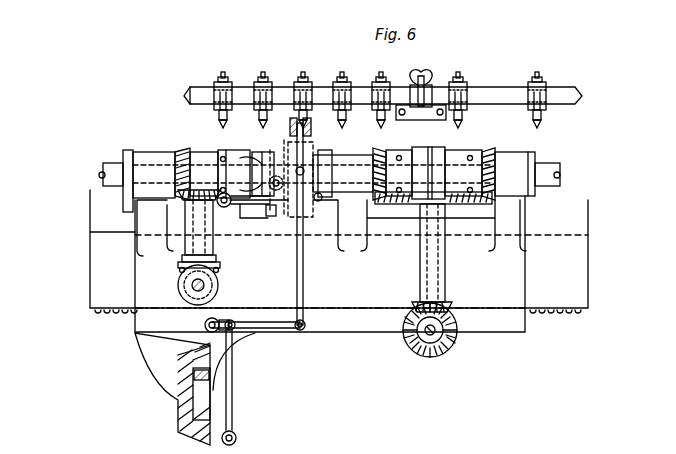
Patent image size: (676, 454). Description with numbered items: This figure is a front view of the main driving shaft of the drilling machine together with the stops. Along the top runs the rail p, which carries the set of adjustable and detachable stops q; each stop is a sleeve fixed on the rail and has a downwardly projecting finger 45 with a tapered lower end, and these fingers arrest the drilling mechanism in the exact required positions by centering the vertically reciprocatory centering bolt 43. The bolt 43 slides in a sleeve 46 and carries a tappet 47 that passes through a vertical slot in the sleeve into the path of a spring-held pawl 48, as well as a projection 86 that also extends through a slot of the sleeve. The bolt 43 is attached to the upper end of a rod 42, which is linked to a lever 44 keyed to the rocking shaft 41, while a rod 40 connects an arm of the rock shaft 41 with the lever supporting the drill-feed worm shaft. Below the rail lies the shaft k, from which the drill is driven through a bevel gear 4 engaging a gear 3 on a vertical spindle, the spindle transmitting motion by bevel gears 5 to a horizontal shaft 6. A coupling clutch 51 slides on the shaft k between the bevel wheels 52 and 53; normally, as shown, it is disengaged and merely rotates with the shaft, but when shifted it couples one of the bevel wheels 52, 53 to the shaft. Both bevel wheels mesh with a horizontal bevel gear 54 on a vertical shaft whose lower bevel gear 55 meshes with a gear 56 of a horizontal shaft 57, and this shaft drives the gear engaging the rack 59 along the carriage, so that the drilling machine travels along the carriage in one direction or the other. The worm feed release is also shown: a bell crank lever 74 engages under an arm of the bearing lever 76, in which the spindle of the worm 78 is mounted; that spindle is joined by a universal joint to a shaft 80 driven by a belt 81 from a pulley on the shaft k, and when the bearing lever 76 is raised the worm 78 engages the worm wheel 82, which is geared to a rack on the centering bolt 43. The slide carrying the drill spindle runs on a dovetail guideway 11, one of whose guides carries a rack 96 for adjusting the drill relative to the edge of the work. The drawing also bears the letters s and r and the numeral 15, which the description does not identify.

The rail p is at (493, 92).
The stops q is at (232, 84).
The drive shaft s is at (108, 173).
The shaft k is at (556, 178).
The direction of travel r is at (296, 343).
The gear 3 is at (199, 164).
The bevel gear 4 is at (178, 152).
The bevel gears 5 is at (218, 288).
The horizontal shaft 6 is at (192, 286).
The dovetail guideway 11 is at (180, 424).
The clutch coupling 15 is at (240, 152).
The rod 40 is at (233, 418).
The rocking shaft 41 is at (205, 332).
The rod 42 is at (303, 284).
The centering bolt 43 is at (311, 118).
The lever 44 is at (255, 330).
The finger 45 is at (543, 116).
The sleeve 46 is at (346, 166).
The tappet 47 is at (326, 160).
The pawl 48 is at (320, 202).
The coupling clutch 51 is at (432, 132).
The bevel wheel 52 is at (376, 154).
The bevel wheel 53 is at (487, 160).
The horizontal bevel gear 54 is at (458, 206).
The bevel gear 55 is at (450, 306).
The gear 56 is at (440, 347).
The horizontal shaft 57 is at (424, 340).
The rack 59 is at (339, 265).
The bell crank lever 74 is at (271, 218).
The bearing lever 76 is at (258, 208).
The worm 78 is at (284, 215).
The shaft 80 is at (180, 192).
The belt 81 is at (124, 188).
The worm wheel 82 is at (268, 154).
The projection 86 is at (292, 140).
The rack 96 is at (210, 380).